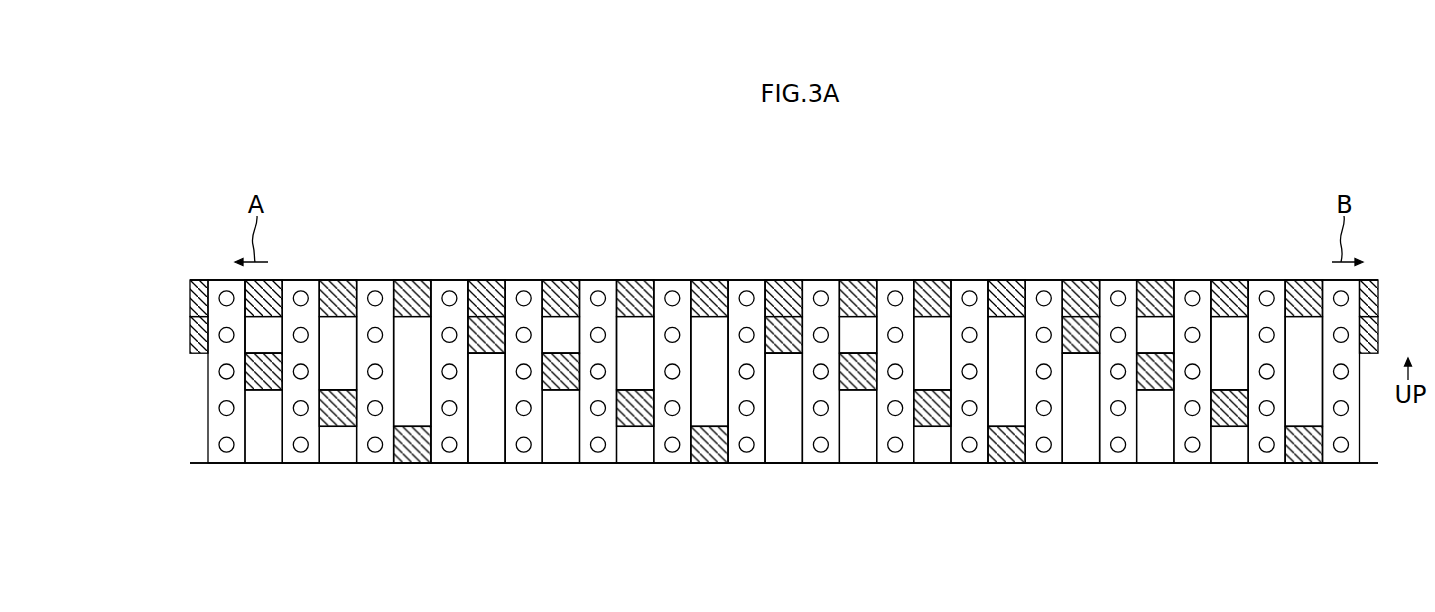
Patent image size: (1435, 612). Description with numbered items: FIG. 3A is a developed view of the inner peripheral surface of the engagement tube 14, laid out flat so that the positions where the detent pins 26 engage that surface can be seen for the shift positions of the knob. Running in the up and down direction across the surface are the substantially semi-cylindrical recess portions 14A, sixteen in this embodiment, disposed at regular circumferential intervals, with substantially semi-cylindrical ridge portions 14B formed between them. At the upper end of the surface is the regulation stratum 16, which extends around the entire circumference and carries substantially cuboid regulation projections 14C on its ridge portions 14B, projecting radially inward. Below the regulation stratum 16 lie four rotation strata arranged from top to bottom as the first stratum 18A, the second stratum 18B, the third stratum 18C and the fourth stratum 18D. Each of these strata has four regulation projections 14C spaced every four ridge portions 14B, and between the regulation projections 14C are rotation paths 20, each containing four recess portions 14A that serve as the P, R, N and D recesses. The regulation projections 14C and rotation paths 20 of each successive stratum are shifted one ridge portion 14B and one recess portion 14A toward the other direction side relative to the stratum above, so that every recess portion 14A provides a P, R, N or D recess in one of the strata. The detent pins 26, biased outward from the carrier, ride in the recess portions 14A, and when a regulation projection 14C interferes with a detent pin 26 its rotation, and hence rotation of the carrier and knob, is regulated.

The engagement tube 14 is at (296, 216).
The recess portions 14A is at (237, 457).
The ridge portions 14B is at (338, 447).
The regulation projections 14C is at (413, 305).
The regulation stratum 16 is at (176, 298).
The first stratum 18A is at (176, 335).
The second stratum 18B is at (176, 372).
The third stratum 18C is at (176, 408).
The fourth stratum 18D is at (176, 445).
The rotation paths 20 is at (343, 337).
The detent pins 26 is at (965, 290).